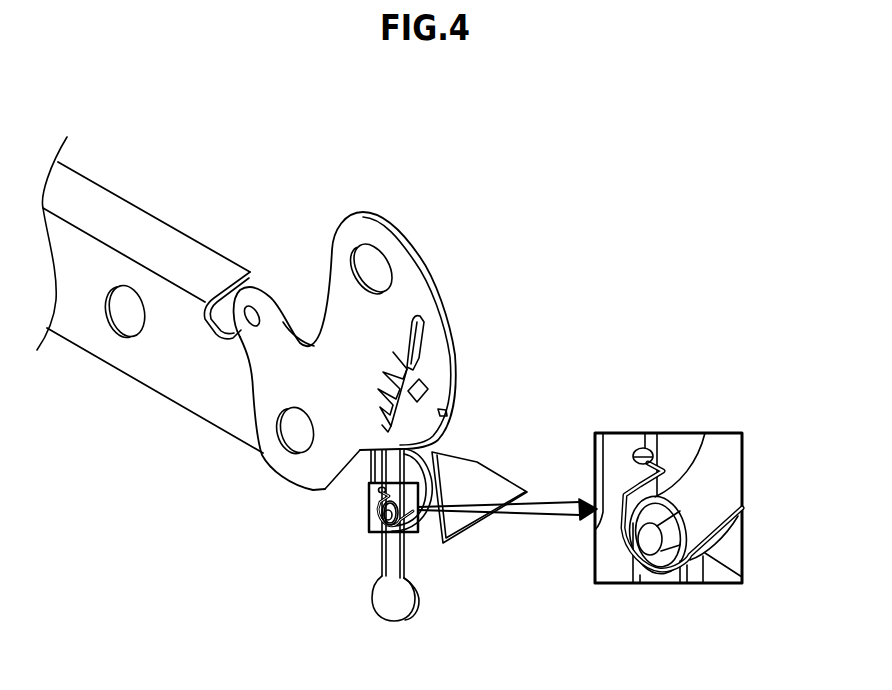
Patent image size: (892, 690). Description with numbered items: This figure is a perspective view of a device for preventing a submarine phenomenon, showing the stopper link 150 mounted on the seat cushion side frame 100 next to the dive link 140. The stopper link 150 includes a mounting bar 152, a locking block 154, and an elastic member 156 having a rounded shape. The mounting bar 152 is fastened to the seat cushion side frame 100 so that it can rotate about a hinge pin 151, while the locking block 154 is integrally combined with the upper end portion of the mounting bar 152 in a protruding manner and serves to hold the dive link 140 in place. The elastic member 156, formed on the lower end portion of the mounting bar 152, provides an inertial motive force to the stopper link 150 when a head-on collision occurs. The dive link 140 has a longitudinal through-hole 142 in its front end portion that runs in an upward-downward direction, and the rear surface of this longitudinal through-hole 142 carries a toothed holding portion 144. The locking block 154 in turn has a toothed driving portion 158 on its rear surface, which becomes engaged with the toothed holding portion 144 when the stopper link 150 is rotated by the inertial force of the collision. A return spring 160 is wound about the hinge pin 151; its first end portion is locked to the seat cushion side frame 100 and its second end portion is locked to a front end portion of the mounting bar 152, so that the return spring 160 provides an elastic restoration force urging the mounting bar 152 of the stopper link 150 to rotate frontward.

The seat cushion side frame 100 is at (132, 213).
The dive link 140 is at (407, 234).
The longitudinal through-hole 142 is at (428, 335).
The toothed holding portion 144 is at (407, 373).
The toothed driving portion 158 is at (417, 398).
The locking block 154 is at (447, 413).
The stopper link 150 is at (370, 548).
The elastic member 156 is at (388, 602).
The return spring 160 is at (627, 513).
The hinge pin 151 is at (642, 567).
The mounting bar 152 is at (708, 528).